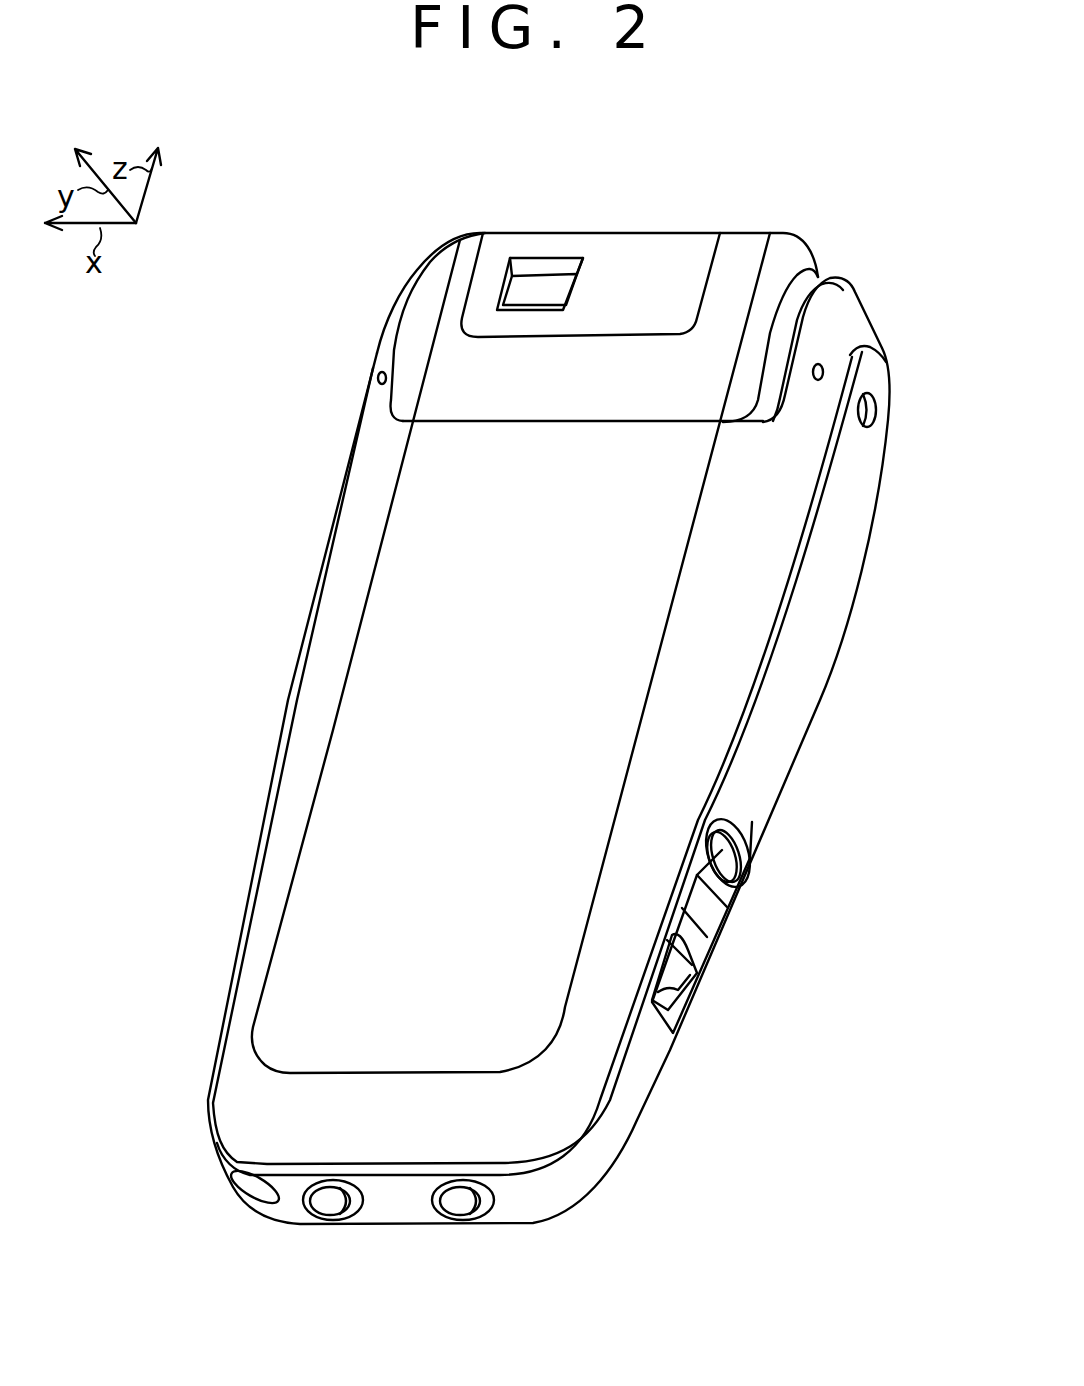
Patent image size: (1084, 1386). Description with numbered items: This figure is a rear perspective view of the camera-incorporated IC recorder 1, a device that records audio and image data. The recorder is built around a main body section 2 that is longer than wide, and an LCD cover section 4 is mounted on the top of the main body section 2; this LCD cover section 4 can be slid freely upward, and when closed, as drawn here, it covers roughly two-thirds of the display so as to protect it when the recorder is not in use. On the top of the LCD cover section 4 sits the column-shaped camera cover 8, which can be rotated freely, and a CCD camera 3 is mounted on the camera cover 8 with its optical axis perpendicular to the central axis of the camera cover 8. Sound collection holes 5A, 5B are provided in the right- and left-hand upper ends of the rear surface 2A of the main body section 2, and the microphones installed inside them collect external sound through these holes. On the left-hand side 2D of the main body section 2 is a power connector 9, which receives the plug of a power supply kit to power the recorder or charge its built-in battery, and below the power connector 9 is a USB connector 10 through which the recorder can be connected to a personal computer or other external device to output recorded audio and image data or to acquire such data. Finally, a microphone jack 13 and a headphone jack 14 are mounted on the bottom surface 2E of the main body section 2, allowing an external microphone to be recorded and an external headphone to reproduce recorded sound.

The camera-incorporated IC recorder 1 is at (648, 1238).
The main body section 2 is at (240, 1121).
The rear surface 2A is at (314, 862).
The left-hand side 2D is at (778, 751).
The bottom surface 2E is at (399, 1214).
The CCD camera 3 is at (541, 292).
The LCD cover section 4 is at (750, 253).
The sound collection hole 5A is at (823, 369).
The sound collection hole 5B is at (378, 378).
The camera cover 8 is at (692, 253).
The power connector 9 is at (723, 862).
The USB connector 10 is at (673, 983).
The microphone jack 13 is at (462, 1200).
The headphone jack 14 is at (333, 1200).